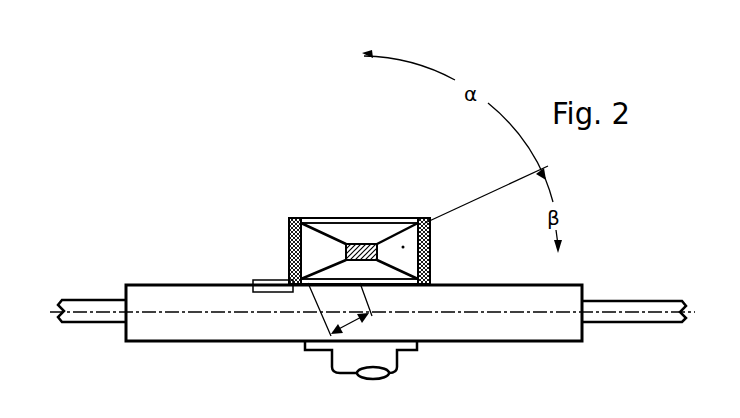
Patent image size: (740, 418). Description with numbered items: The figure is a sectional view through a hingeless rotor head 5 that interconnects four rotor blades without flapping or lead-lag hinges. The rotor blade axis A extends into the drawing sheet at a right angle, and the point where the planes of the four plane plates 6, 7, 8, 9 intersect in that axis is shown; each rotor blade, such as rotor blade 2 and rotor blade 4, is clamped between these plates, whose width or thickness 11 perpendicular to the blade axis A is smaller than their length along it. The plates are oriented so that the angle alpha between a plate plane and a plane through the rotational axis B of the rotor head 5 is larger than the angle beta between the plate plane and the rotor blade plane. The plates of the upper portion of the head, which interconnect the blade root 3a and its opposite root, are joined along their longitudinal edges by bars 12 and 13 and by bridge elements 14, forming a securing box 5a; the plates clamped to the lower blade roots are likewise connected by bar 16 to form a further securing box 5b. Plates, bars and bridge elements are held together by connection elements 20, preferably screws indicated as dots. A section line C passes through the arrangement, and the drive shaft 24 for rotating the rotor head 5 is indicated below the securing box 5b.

The rotor blade 2 is at (631, 307).
The blade root 3a is at (374, 244).
The rotor blade 4 is at (73, 307).
The rotor head 5 is at (275, 209).
The securing box 5a is at (430, 232).
The securing box 5b is at (507, 290).
The plane plate 6 is at (395, 234).
The plane plate 7 is at (323, 233).
The plane plate 8 is at (402, 265).
The plane plate 9 is at (300, 285).
The width or thickness 11 is at (340, 309).
The bar 12 is at (290, 240).
The bar 13 is at (403, 247).
The bridge element 14 is at (347, 224).
The bar 16 is at (462, 323).
The connection element 20 is at (298, 218).
The drive shaft 24 is at (348, 363).
The rotor blade axis A is at (355, 242).
The rotational axis B is at (362, 380).
The section line C is at (585, 253).